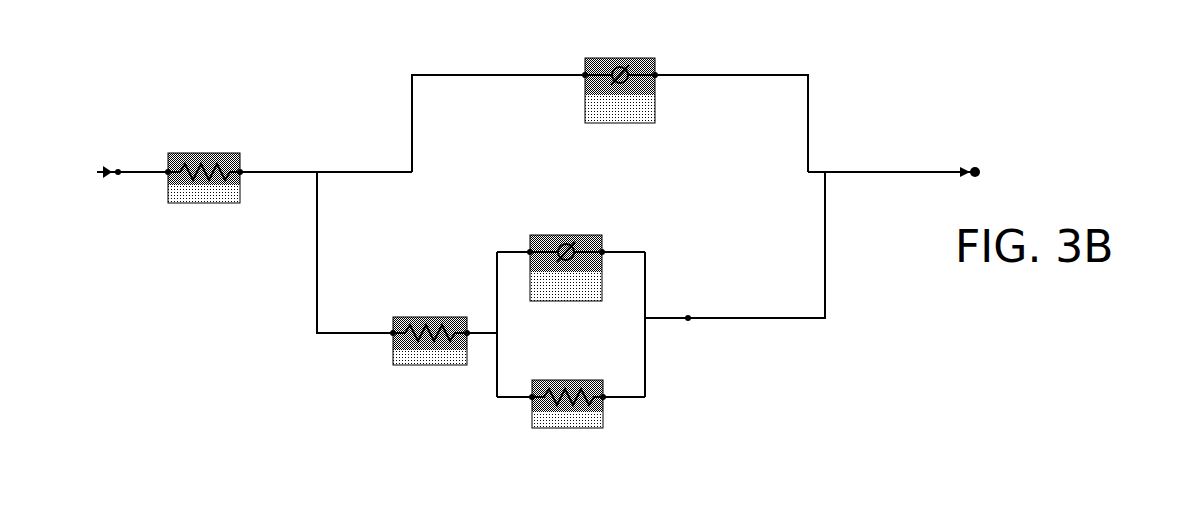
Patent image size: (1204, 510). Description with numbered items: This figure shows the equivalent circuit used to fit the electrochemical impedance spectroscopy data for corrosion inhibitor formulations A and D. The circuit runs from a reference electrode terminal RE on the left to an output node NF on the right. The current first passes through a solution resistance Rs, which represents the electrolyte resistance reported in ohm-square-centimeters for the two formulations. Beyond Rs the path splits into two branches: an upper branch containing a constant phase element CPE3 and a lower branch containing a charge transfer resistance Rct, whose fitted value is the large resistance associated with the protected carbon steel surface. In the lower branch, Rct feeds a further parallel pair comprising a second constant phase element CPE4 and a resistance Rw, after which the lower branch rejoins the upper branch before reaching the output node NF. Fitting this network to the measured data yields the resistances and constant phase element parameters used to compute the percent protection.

The reference electrode input terminal RE is at (105, 184).
The output node NF is at (969, 184).
The solution resistance Rs is at (204, 178).
The constant phase element 3 CPE3 is at (620, 90).
The charge transfer resistance Rct is at (430, 341).
The constant phase element 4 CPE4 is at (566, 268).
The Warburg resistance Rw is at (567, 404).